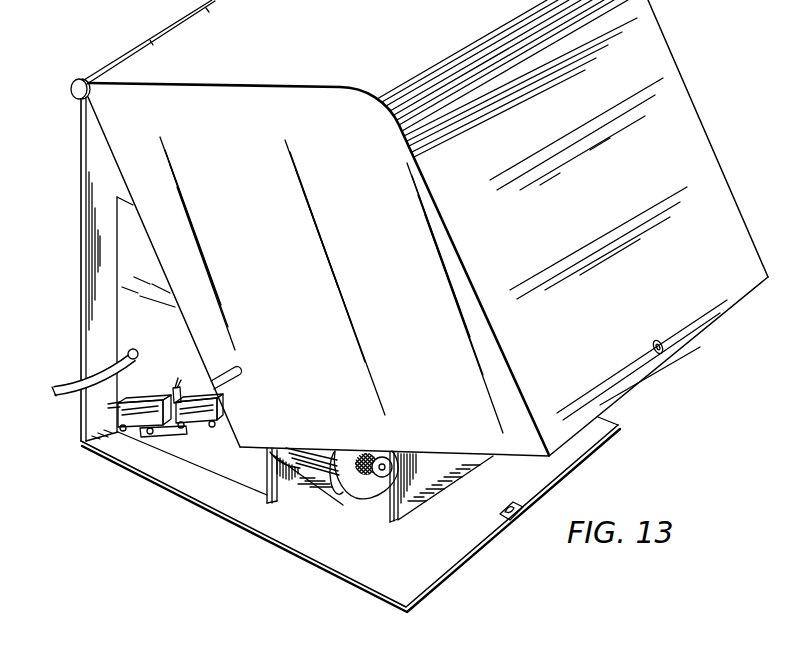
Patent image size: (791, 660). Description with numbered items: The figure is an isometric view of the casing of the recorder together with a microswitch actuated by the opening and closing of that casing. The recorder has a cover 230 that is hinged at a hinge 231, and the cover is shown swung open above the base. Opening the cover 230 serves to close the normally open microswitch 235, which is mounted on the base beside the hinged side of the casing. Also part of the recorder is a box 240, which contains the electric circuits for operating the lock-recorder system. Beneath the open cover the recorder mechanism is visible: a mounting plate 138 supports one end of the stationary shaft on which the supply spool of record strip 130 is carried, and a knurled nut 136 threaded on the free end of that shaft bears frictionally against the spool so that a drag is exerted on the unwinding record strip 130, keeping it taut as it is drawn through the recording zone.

The hinge 231 is at (71, 87).
The cover 230 is at (685, 97).
The box 240 is at (133, 333).
The microswitch 235 is at (153, 454).
The mounting plate 138 is at (279, 498).
The record strip 130 is at (338, 490).
The knurled nut 136 is at (380, 478).